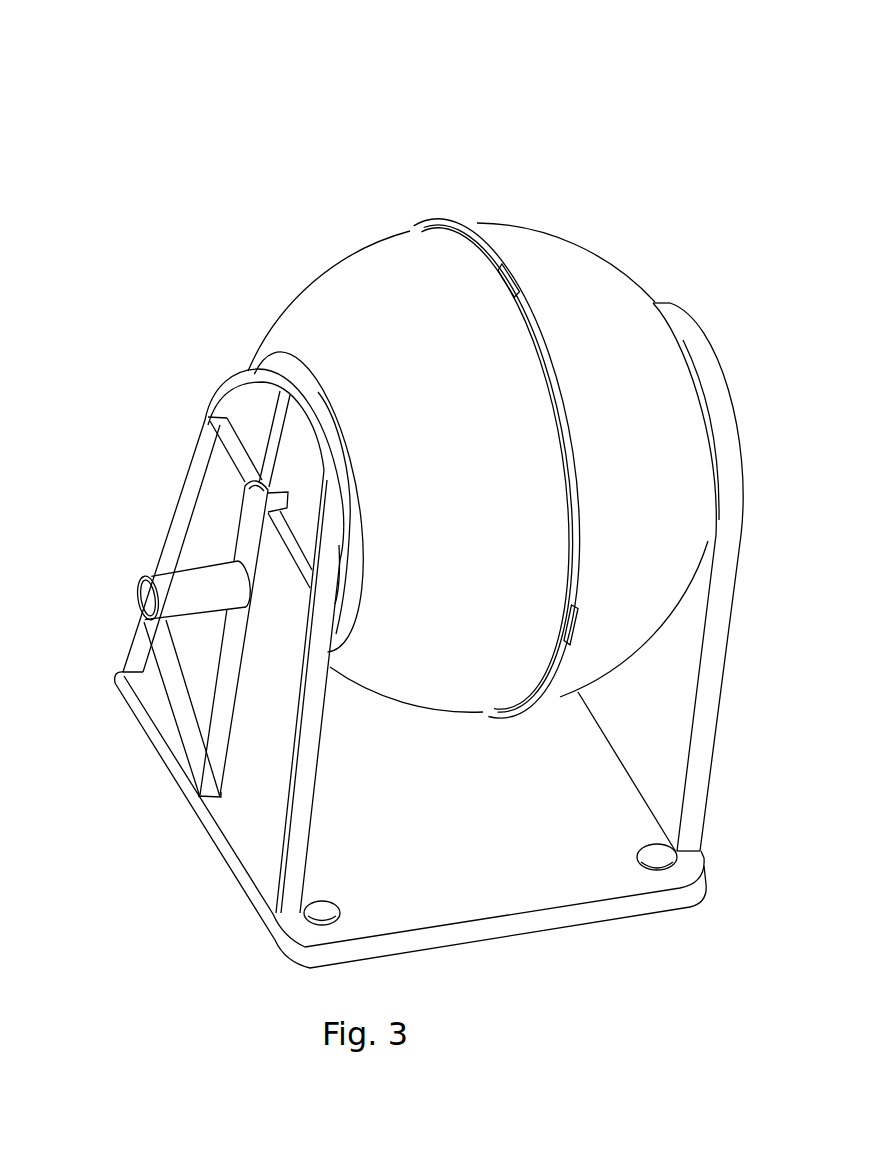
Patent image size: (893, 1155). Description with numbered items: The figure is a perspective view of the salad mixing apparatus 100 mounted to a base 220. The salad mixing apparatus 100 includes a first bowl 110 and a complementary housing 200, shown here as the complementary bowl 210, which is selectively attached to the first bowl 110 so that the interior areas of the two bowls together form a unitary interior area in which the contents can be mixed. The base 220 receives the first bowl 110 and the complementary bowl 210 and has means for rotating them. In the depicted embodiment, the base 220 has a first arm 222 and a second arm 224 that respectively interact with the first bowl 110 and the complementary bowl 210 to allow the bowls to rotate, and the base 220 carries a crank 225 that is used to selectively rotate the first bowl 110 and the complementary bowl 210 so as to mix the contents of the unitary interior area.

The salad mixing apparatus 100 is at (184, 134).
The first bowl 110 is at (573, 232).
The complementary housing 200 is at (248, 282).
The complementary bowl 210 is at (327, 258).
The base 220 is at (225, 917).
The first arm 222 is at (718, 693).
The second arm 224 is at (252, 417).
The crank 225 is at (177, 588).